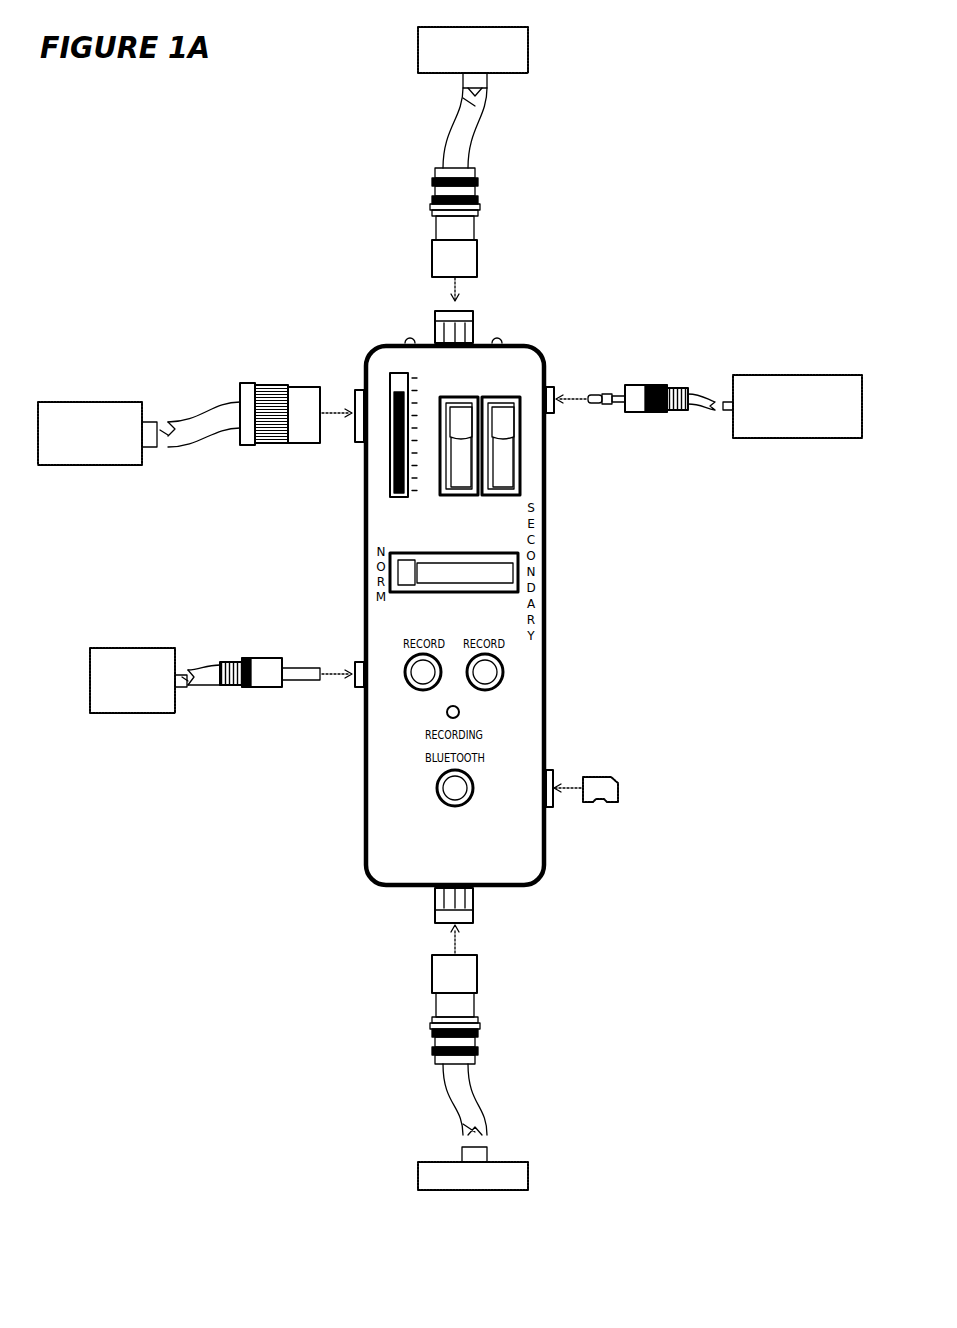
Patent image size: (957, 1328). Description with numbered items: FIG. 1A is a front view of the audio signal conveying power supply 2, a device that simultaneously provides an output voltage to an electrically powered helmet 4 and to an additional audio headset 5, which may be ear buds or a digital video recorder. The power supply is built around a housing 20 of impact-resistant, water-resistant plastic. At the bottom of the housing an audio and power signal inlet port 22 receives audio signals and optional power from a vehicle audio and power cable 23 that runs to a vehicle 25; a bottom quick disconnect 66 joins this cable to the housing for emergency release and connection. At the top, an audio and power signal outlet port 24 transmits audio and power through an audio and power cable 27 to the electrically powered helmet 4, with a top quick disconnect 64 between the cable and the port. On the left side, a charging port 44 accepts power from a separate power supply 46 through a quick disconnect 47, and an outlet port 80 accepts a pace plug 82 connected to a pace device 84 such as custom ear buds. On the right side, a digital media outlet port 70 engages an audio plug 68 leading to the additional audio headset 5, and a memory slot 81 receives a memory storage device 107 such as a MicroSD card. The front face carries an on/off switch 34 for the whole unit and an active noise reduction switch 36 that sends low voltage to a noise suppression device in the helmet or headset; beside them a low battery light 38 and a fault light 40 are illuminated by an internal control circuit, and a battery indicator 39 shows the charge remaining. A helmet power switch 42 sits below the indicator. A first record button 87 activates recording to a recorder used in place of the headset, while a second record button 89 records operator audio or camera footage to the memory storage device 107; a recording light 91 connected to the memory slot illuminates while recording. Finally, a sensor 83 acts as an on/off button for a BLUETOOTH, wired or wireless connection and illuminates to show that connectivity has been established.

The audio signal conveying power supply 2 is at (576, 322).
The electrically powered helmet 4 is at (532, 52).
The additional audio headset 5 is at (804, 374).
The housing 20 is at (366, 352).
The audio and power signal inlet port 22 is at (433, 918).
The vehicle audio and power cable 23 is at (446, 1102).
The audio and power signal outlet port 24 is at (435, 315).
The vehicle 25 is at (533, 1174).
The audio and power cable 27 is at (446, 130).
The on/off switch 34 is at (448, 398).
The active noise reduction switch 36 is at (506, 398).
The low battery light 38 is at (502, 340).
The battery indicator 39 is at (390, 472).
The fault light 40 is at (405, 337).
The helmet power switch 42 is at (460, 553).
The charging port 44 is at (357, 660).
The power supply 46 is at (131, 638).
The quick disconnect 47 is at (262, 656).
The top quick disconnect 64 is at (431, 258).
The bottom quick disconnect 66 is at (431, 976).
The audio plug 68 is at (646, 385).
The digital media outlet port 70 is at (552, 388).
The outlet port 80 is at (358, 388).
The memory slot 81 is at (551, 770).
The pace plug 82 is at (308, 385).
The sensor 83 is at (440, 802).
The pace device 84 is at (90, 402).
The first record button 87 is at (418, 688).
The second record button 89 is at (491, 688).
The recording light 91 is at (460, 711).
The memory storage device 107 is at (617, 776).